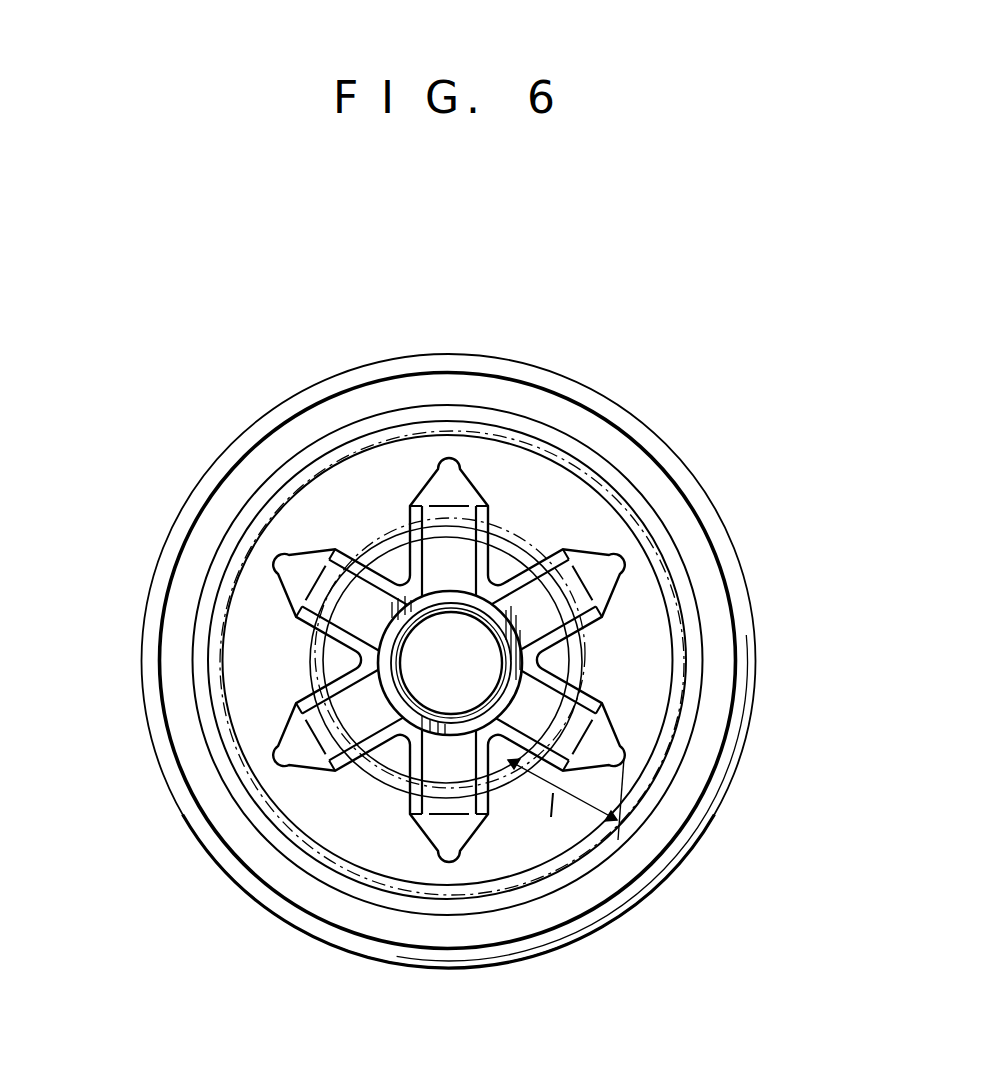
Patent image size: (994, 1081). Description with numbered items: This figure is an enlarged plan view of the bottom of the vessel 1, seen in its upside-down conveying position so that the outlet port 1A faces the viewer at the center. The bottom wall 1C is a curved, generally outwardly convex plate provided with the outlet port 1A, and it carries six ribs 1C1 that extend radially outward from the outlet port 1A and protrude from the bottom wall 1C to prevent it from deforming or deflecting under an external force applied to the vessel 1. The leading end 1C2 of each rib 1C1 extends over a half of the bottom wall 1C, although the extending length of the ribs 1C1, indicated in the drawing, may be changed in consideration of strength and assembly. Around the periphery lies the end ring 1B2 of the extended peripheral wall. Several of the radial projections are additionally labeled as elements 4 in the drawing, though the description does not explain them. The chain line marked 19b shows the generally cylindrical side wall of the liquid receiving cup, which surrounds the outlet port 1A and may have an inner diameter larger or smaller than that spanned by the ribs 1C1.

The vessel 1 is at (293, 350).
The outlet port 1A is at (487, 607).
The end ring 1B2 is at (703, 503).
The bottom wall 1C is at (640, 638).
The rib 1C1 is at (772, 745).
The leading end 1C2 is at (755, 803).
The ribs 4 is at (451, 447).
The side wall 19b is at (625, 510).